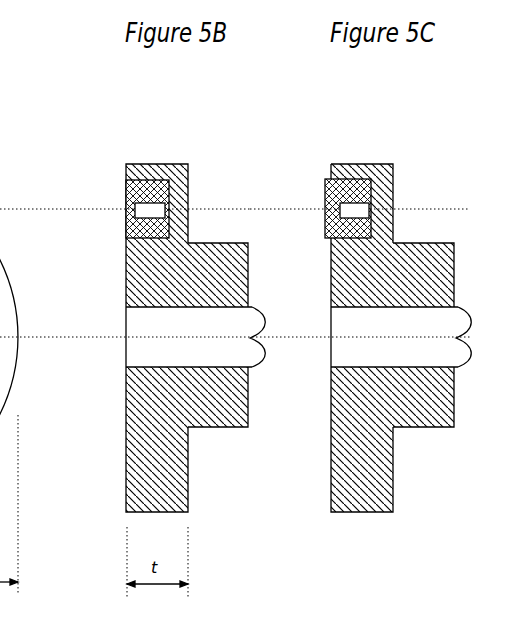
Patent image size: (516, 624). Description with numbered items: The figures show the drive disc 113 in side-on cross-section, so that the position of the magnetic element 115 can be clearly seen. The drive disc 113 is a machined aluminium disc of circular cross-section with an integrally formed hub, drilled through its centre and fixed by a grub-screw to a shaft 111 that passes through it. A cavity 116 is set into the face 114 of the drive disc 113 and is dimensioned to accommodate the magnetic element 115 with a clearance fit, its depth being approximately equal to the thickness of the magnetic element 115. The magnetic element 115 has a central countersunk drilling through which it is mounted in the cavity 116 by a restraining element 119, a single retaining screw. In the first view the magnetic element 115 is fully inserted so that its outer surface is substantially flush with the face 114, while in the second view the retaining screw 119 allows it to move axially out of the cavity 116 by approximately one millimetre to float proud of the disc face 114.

In FIG. 5B, the shaft 111 is at (143, 350).
In FIG. 5C, the shaft 111 is at (357, 350).
In FIG. 5B, the drive disc 113 is at (177, 260).
In FIG. 5C, the drive disc 113 is at (404, 247).
In FIG. 5B, the face 114 is at (127, 503).
In FIG. 5C, the face 114 is at (332, 503).
In FIG. 5B, the magnetic element 115 is at (150, 186).
In FIG. 5C, the magnetic element 115 is at (354, 188).
In FIG. 5C, the cavity 116 is at (396, 176).
In FIG. 5B, the restraining element 119 is at (135, 206).
In FIG. 5C, the restraining element 119 is at (340, 206).